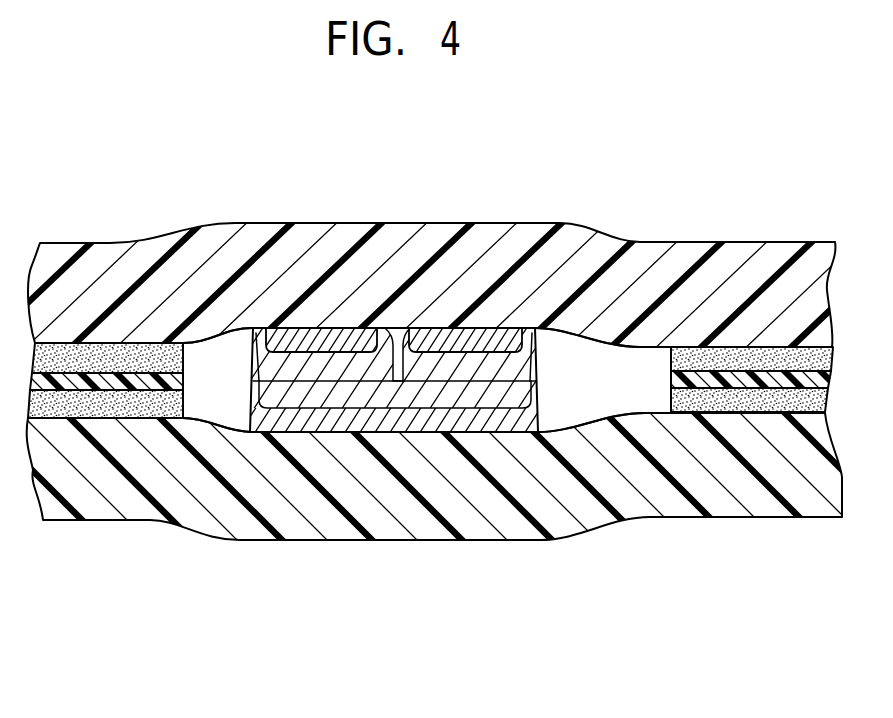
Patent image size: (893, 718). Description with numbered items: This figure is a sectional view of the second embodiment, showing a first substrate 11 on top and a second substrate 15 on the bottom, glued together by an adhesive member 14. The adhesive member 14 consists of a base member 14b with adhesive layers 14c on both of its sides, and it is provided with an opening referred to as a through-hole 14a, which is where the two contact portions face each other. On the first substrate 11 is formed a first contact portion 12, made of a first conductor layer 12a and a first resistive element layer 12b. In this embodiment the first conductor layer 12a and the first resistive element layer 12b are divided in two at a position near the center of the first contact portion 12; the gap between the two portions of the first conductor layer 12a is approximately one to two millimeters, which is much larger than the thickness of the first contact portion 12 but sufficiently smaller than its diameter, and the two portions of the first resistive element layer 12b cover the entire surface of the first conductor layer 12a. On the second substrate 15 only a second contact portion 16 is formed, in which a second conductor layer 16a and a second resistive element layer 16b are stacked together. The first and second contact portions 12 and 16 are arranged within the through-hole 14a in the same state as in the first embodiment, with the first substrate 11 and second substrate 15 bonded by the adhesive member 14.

The first substrate 11 is at (580, 268).
The first contact portion 12 is at (557, 175).
The first conductor layer 12a is at (307, 343).
The first resistive element layer 12b is at (336, 370).
The adhesive member 14 is at (248, 176).
The through-hole 14a is at (213, 377).
The base member 14b is at (82, 378).
The adhesive layers 14c is at (148, 398).
The second substrate 15 is at (563, 495).
The second contact portion 16 is at (482, 602).
The second conductor layer 16a is at (354, 426).
The second resistive element layer 16b is at (460, 397).